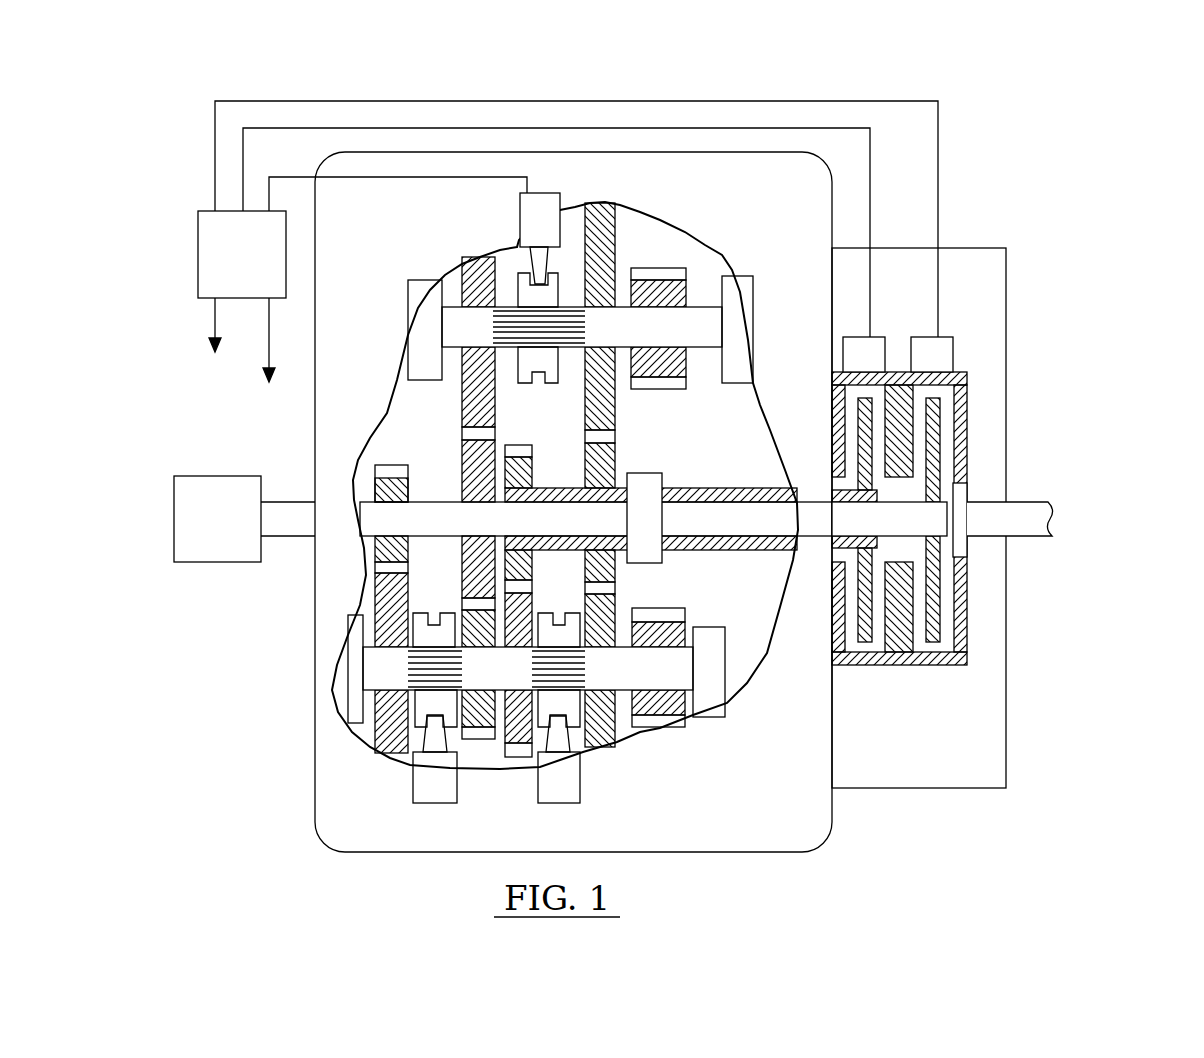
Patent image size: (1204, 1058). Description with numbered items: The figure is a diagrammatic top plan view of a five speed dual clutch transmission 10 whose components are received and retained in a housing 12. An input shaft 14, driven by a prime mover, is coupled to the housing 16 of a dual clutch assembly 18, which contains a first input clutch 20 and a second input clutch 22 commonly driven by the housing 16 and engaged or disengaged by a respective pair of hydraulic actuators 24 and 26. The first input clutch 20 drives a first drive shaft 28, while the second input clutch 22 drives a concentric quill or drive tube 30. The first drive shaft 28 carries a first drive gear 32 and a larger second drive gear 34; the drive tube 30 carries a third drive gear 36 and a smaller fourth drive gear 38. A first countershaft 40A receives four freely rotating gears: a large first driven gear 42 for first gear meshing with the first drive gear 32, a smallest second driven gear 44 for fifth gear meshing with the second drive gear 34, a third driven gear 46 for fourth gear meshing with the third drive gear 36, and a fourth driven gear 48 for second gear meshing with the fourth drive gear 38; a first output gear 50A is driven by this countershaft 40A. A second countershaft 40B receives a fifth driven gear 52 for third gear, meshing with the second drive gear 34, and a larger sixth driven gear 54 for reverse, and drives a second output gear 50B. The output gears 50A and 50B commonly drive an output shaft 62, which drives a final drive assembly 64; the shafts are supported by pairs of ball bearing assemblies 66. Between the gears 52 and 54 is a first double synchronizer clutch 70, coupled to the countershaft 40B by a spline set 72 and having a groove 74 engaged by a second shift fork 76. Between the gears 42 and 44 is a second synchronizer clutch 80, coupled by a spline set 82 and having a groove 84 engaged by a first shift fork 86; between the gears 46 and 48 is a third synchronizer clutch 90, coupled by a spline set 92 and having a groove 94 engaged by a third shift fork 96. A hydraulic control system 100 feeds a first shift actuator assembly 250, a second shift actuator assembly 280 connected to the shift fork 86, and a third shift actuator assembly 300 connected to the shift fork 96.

The dual clutch transmission 10 is at (1068, 141).
The housing 12 is at (838, 822).
The input shaft 14 is at (1026, 512).
The housing of dual clutch assembly 16 is at (968, 412).
The dual clutch assembly 18 is at (982, 518).
The first input clutch 20 is at (940, 466).
The second input clutch 22 is at (866, 642).
The hydraulic actuator 24 is at (940, 357).
The hydraulic actuator 26 is at (866, 330).
The first drive shaft 28 is at (933, 520).
The quill or drive tube 30 is at (836, 540).
The first drive gear 32 is at (380, 478).
The second drive gear 34 is at (468, 483).
The third drive gear 36 is at (527, 470).
The fourth drive gear 38 is at (610, 463).
The first countershaft 40A is at (536, 701).
The second countershaft 40B is at (550, 301).
The first driven gear 42 is at (378, 732).
The second driven gear 44 is at (487, 735).
The third driven gear 46 is at (525, 747).
The fourth driven gear 48 is at (635, 730).
The first output gear 50A is at (660, 630).
The second output gear 50B is at (672, 388).
The fifth driven gear 52 is at (476, 272).
The sixth driven gear 54 is at (605, 210).
The output shaft 62 is at (281, 520).
The final drive assembly 64 is at (217, 519).
The ball bearing assembly 66 is at (420, 332).
The first double synchronizer clutch 70 is at (465, 408).
The spline set 72 is at (585, 338).
The circumferential groove 74 is at (540, 377).
The second shift fork 76 is at (538, 257).
The second double synchronizer clutch 80 is at (445, 627).
The spline set 82 is at (455, 676).
The circumferential groove 84 is at (362, 667).
The first shift fork 86 is at (427, 740).
The third double synchronizer clutch 90 is at (565, 628).
The spline set 92 is at (590, 680).
The circumferential groove 94 is at (590, 594).
The third shift fork 96 is at (578, 742).
The hydraulic control system 100 is at (563, 278).
The first shift actuator assembly 250 is at (545, 203).
The second shift actuator assembly 280 is at (435, 787).
The third shift actuator assembly 300 is at (560, 787).